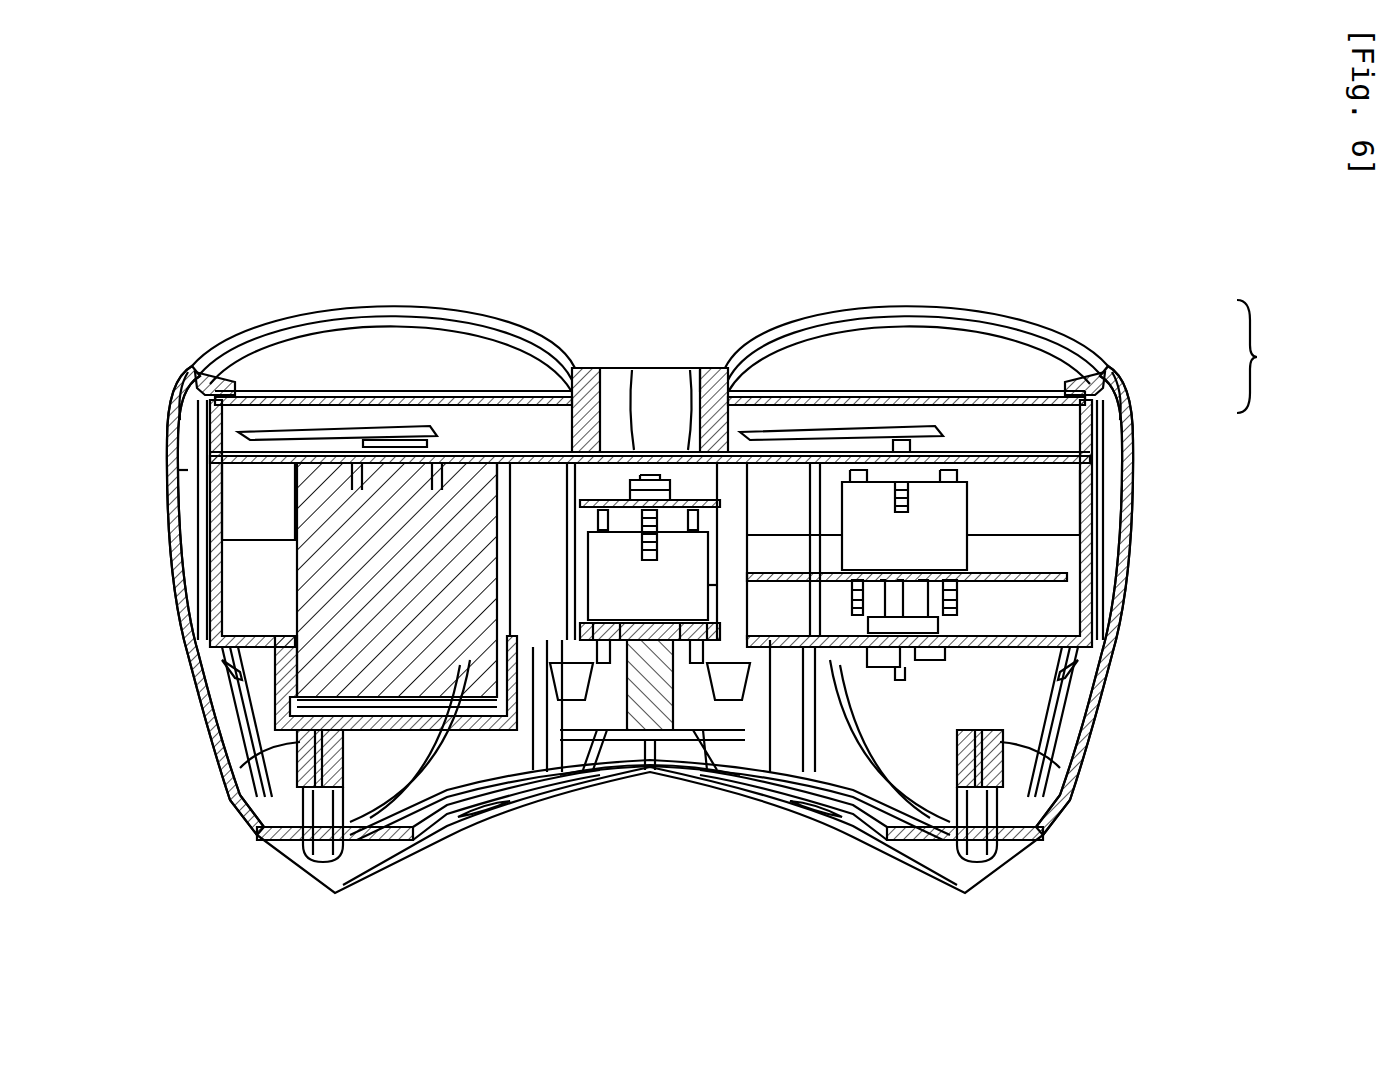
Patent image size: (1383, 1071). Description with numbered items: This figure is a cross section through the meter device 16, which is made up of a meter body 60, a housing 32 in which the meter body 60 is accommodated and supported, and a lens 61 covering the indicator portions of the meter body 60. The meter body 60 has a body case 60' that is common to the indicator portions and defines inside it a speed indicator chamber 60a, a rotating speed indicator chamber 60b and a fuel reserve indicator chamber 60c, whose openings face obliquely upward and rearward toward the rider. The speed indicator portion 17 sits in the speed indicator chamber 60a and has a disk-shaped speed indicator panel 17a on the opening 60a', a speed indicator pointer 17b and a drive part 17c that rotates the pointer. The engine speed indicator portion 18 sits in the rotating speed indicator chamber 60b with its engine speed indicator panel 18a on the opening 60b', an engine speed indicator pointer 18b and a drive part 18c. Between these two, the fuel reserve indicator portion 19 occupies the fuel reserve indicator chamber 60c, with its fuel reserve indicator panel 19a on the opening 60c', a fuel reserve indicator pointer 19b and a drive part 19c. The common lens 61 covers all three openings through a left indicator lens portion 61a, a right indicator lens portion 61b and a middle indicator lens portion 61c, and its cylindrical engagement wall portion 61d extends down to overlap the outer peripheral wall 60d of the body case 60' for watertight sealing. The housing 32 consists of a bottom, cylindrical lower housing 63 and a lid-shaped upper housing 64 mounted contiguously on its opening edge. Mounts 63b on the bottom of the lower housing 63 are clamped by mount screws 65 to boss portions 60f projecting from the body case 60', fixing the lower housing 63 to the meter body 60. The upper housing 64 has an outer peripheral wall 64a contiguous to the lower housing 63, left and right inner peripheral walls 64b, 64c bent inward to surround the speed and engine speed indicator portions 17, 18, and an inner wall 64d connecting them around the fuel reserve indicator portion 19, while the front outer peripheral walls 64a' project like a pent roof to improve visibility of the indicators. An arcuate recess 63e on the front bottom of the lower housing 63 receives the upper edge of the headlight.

The meter device 16 is at (1078, 322).
The speed indicator portion 17 is at (458, 442).
The speed indicator panel 17a is at (526, 470).
The speed indicator pointer 17b is at (328, 398).
The drive part 17c is at (503, 470).
The engine speed indicator portion 18 is at (926, 440).
The engine speed indicator panel 18a is at (985, 470).
The engine speed indicator pointer 18b is at (842, 432).
The drive part 18c is at (1005, 430).
The fuel reserve indicator portion 19 is at (677, 480).
The fuel reserve indicator panel 19a is at (722, 490).
The fuel reserve indicator pointer 19b is at (647, 478).
The drive part 19c is at (710, 585).
The housing 32 is at (1269, 356).
The meter body 60 is at (696, 620).
The body case 60' is at (1154, 520).
The speed indicator chamber 60a is at (194, 595).
The opening 60a' is at (258, 501).
The rotating speed indicator chamber 60b is at (979, 556).
The opening 60b' is at (1047, 502).
The fuel reserve indicator chamber 60c is at (546, 551).
The opening 60c' is at (761, 551).
The outer peripheral wall 60d is at (180, 568).
The boss portion 60f is at (295, 745).
The lens 61 is at (790, 400).
The left indicator lens portion 61a is at (282, 400).
The right indicator lens portion 61b is at (1012, 440).
The middle indicator lens portion 61c is at (620, 400).
The engagement wall portion 61d is at (182, 483).
The lower housing 63 is at (1170, 482).
The mount 63b is at (385, 815).
The arcuate recess 63e is at (728, 785).
The upper housing 64 is at (1118, 368).
The outer peripheral wall 64a is at (589, 333).
The front outer peripheral wall 64a' is at (650, 287).
The left inner peripheral wall 64b is at (233, 372).
The right inner peripheral wall 64c is at (1078, 342).
The inner wall 64d is at (703, 372).
The mount screw 65 is at (303, 840).